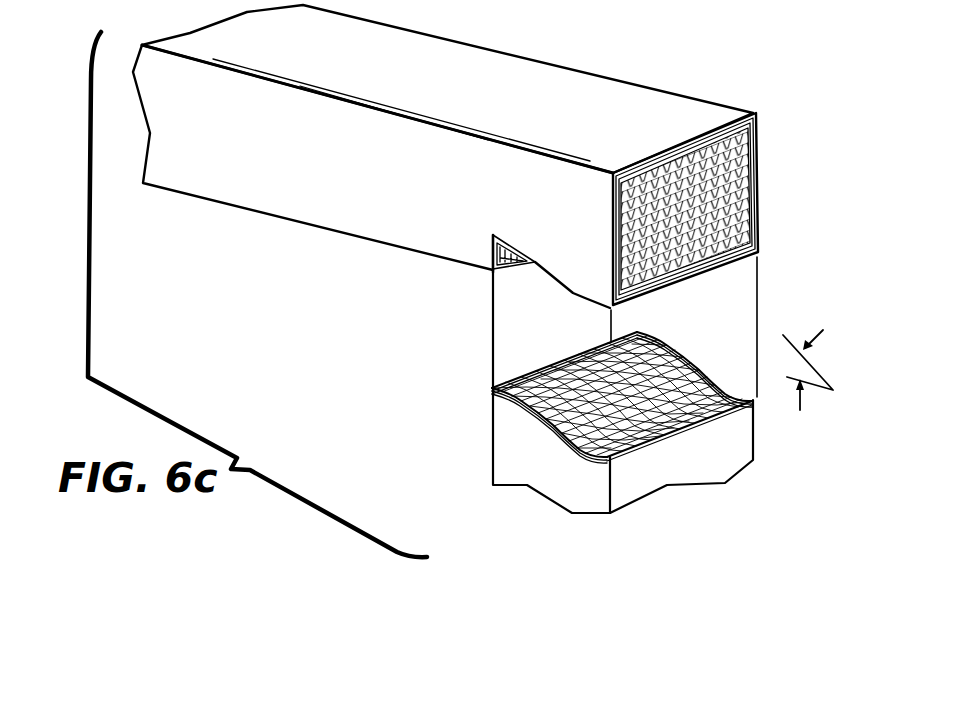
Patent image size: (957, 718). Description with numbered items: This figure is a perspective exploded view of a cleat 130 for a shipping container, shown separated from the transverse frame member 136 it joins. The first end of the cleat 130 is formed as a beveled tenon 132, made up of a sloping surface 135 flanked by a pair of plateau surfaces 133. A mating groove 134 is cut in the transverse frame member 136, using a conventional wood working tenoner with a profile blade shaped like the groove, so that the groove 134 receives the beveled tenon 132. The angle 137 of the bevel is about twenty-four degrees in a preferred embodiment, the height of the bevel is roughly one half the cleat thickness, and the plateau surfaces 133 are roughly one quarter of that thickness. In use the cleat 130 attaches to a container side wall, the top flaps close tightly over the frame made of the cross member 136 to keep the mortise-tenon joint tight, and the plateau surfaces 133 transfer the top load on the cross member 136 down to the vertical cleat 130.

The cleat 130 is at (547, 485).
The beveled tenon 132 is at (503, 413).
The plateau surfaces 133 is at (590, 352).
The mating groove 134 is at (527, 270).
The sloping surface 135 is at (667, 353).
The transverse frame member 136 is at (331, 205).
The angle of the bevel 137 is at (791, 357).